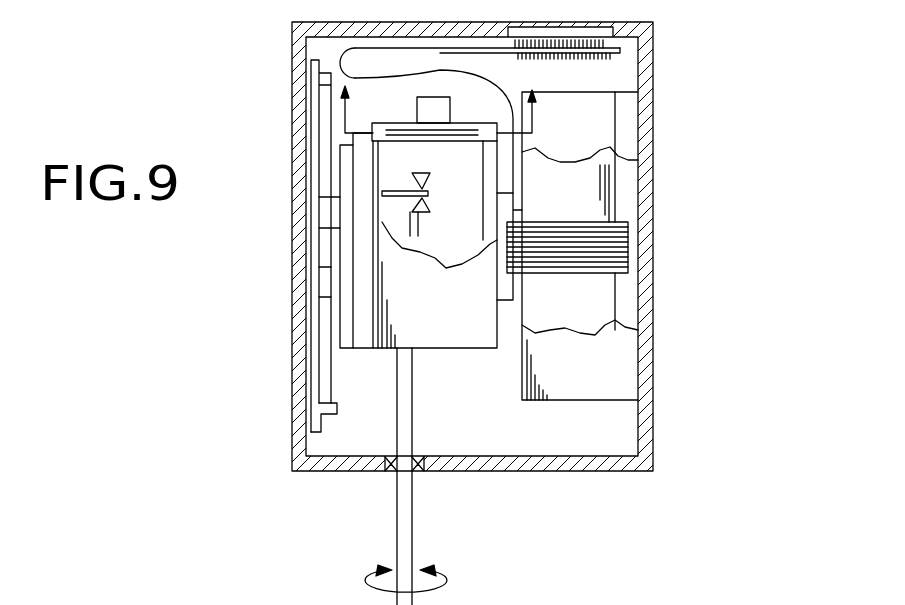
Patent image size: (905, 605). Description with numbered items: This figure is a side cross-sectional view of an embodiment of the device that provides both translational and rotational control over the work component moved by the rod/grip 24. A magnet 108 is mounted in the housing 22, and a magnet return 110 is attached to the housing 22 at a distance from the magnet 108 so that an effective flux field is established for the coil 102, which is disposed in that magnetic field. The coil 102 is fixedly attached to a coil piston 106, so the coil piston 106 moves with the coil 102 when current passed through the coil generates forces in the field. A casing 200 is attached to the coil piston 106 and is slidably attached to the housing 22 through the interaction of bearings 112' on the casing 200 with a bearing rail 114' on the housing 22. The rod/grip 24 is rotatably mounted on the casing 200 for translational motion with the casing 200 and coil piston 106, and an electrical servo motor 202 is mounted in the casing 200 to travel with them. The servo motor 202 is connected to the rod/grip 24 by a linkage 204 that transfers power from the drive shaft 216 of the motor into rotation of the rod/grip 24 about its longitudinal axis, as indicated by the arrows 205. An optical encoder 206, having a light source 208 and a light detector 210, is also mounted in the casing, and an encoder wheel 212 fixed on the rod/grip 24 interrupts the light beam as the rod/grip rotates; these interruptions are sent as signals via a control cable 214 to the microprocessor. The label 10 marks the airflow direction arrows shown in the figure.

The housing 22 is at (648, 296).
The rod/grip 24 is at (412, 528).
The airflow 10 is at (452, 109).
The coil 102 is at (595, 248).
The coil piston 106 is at (522, 210).
The magnet 108 is at (590, 167).
The magnet return 110 is at (598, 372).
The bearings 112' is at (257, 246).
The bearing rail 114' is at (256, 412).
The casing 200 is at (400, 303).
The electrical servo motor 202 is at (452, 243).
The linkage 204 is at (458, 126).
The arrows 205 is at (365, 583).
The optical encoder 206 is at (400, 203).
The light source 208 is at (410, 209).
The light detector 210 is at (412, 173).
The encoder wheel 212 is at (420, 181).
The control cable 214 is at (341, 58).
The drive shaft 216 is at (508, 157).